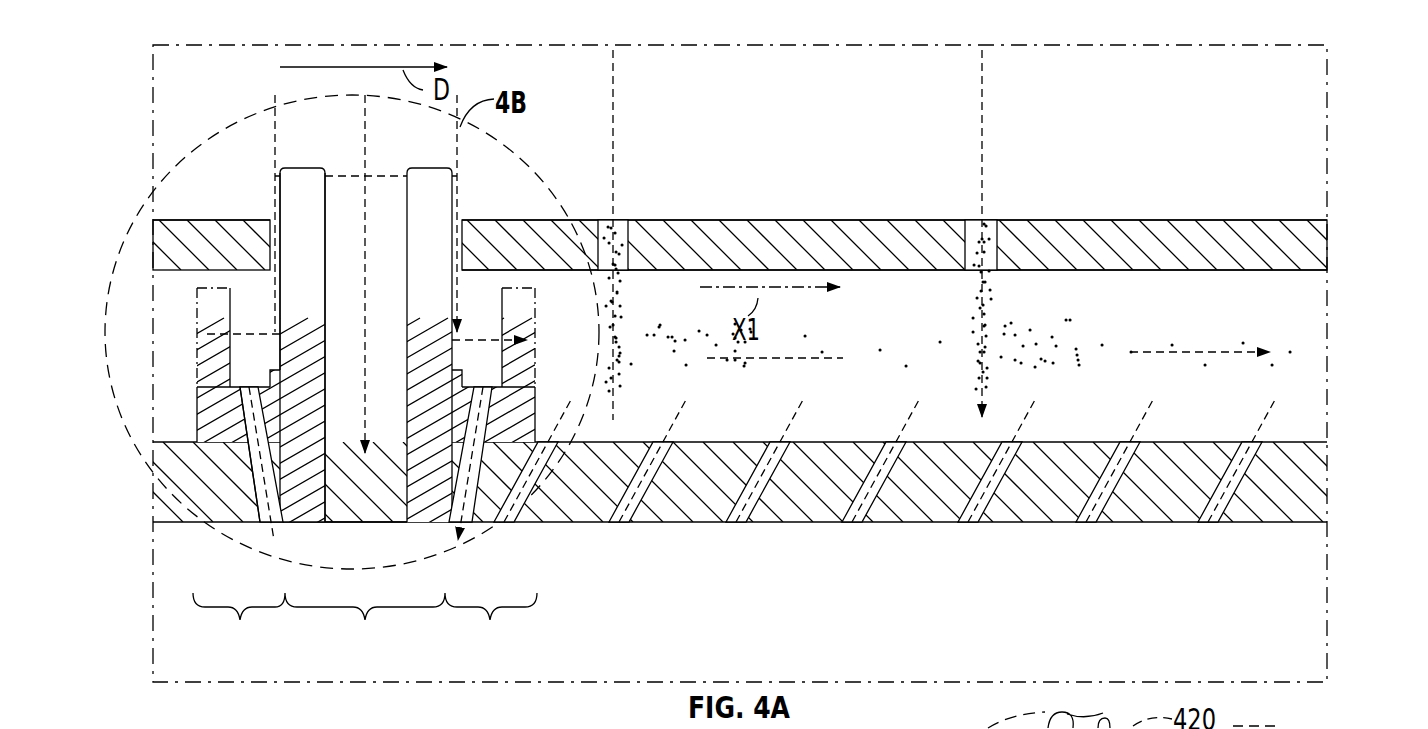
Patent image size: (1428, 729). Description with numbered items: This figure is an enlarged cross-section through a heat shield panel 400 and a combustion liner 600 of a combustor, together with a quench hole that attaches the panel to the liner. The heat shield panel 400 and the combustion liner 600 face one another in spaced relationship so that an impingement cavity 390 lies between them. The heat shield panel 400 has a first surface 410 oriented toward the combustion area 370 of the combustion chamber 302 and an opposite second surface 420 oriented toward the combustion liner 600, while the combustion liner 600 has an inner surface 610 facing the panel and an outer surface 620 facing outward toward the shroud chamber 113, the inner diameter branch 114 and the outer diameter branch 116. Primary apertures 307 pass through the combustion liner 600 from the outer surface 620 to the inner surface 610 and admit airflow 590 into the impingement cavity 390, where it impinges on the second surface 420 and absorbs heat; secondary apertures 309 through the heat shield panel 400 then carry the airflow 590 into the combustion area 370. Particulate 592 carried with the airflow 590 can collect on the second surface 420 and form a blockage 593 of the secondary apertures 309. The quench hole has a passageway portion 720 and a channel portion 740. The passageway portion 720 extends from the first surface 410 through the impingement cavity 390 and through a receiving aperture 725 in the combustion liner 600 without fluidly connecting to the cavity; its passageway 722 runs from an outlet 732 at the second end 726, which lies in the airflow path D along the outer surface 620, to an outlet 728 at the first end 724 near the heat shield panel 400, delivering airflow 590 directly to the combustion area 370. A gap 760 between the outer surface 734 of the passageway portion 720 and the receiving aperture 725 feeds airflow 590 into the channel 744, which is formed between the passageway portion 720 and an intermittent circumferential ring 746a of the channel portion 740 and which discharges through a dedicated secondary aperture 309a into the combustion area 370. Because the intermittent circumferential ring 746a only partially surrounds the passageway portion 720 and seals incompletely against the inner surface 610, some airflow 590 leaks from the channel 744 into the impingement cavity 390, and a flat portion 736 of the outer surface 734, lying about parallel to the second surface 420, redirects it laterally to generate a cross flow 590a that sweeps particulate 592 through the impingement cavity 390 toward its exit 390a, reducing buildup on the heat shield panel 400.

The shroud chamber 113 is at (857, 127).
The inner diameter branch 114 is at (857, 127).
The outer diameter branch 116 is at (927, 141).
The combustion chamber 302 is at (736, 651).
The primary apertures 307 is at (630, 243).
The secondary apertures 309 is at (552, 500).
The dedicated secondary aperture 309a is at (247, 420).
The combustion area 370 is at (790, 665).
The impingement cavity 390 is at (1158, 316).
The exit 390a is at (1297, 287).
The heat shield panel 400 is at (1307, 493).
The first surface 410 is at (1313, 525).
The second surface 420 is at (1312, 443).
The airflow 590 is at (613, 92).
The lateral airflow 590a is at (757, 360).
The particulate 592 is at (621, 309).
The blockage 593 is at (652, 456).
The combustion liner 600 is at (1300, 243).
The inner surface 610 is at (1310, 272).
The outer surface 620 is at (1303, 219).
The passageway portion 720 is at (476, 413).
The passageway 722 is at (327, 292).
The first end 724 is at (300, 521).
The receiving aperture 725 is at (262, 221).
The second end 726 is at (366, 201).
The outlet 728 is at (393, 522).
The outlet 732 is at (348, 197).
The outer surface 734 is at (282, 273).
The flat portion 736 is at (276, 374).
The channel portion 740 is at (366, 473).
The channel 744 is at (253, 297).
The intermittent circumferential ring 746a is at (200, 288).
The gap 760 is at (270, 208).